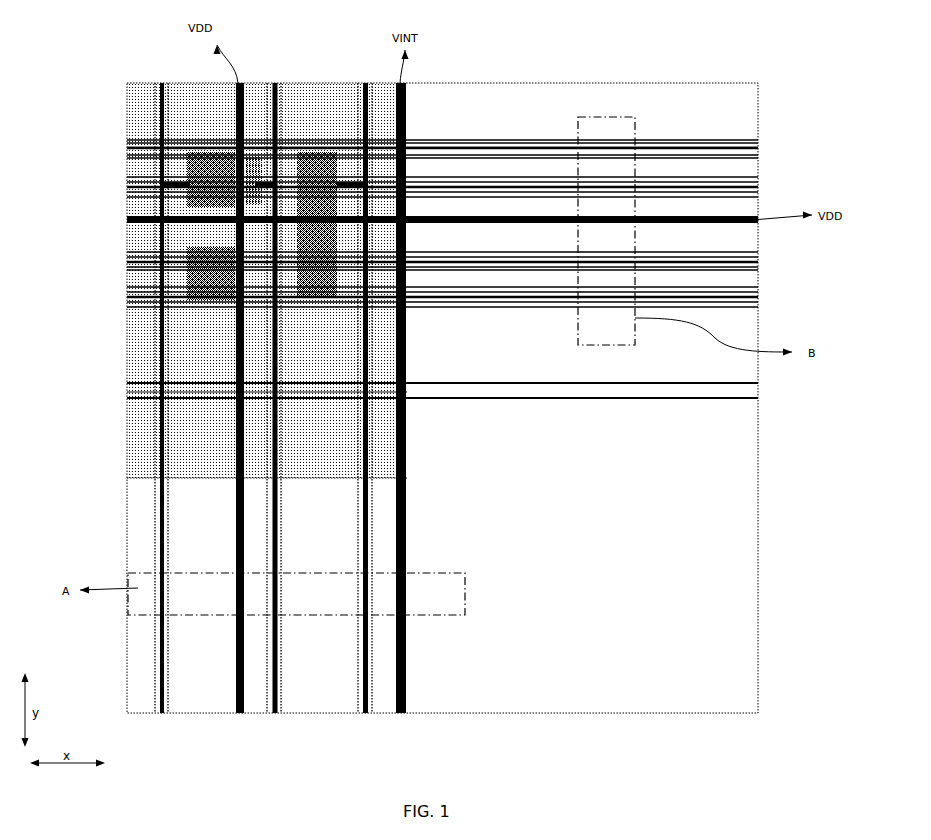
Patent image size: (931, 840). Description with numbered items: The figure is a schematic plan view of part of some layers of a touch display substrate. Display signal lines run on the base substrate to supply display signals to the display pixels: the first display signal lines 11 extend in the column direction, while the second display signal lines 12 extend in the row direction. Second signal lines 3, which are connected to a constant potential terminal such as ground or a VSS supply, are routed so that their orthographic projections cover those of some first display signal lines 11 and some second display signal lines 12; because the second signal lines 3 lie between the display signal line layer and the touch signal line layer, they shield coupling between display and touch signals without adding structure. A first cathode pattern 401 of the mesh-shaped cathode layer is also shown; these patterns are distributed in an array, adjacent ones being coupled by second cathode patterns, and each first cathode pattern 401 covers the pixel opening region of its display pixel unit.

The second signal line 3 is at (127, 145).
The first display signal line 11 is at (162, 83).
The second display signal line 12 is at (758, 150).
The first cathode pattern 401 is at (127, 322).